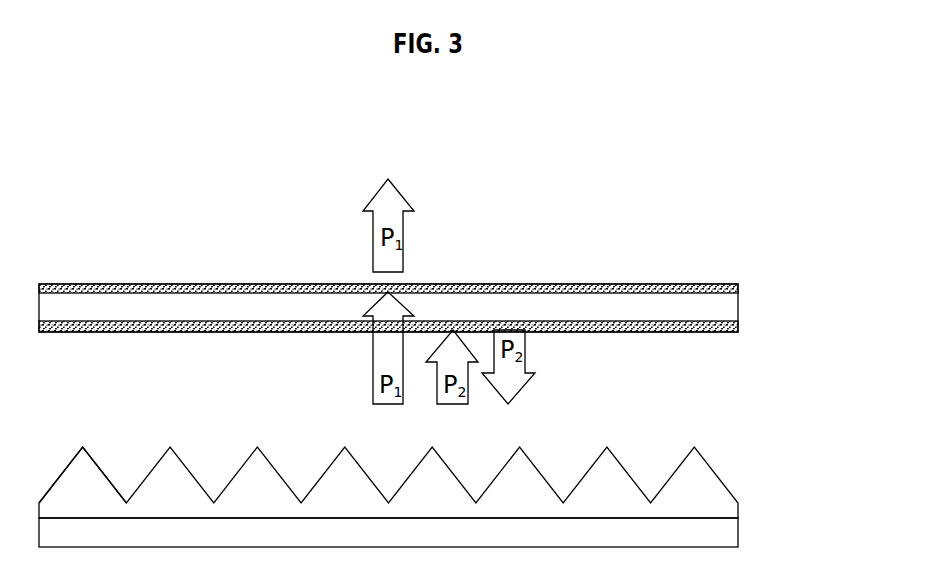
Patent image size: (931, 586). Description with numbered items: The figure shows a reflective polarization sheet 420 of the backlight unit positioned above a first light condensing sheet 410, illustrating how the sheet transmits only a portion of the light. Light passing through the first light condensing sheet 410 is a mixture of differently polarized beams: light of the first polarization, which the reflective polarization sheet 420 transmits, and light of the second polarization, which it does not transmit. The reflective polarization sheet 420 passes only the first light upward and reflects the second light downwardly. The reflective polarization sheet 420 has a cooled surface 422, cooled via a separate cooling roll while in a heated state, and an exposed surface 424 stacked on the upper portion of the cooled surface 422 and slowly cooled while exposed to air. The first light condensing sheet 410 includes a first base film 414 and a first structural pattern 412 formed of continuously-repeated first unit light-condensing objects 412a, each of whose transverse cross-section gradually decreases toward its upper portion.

The reflective polarization sheet 420 is at (431, 286).
The exposed surface 424 is at (707, 285).
The cooled surface 422 is at (707, 330).
The first light condensing sheet 410 is at (437, 470).
The first structural pattern 412 is at (702, 487).
The first unit light-condensing object 412a is at (105, 492).
The first base film 414 is at (720, 532).